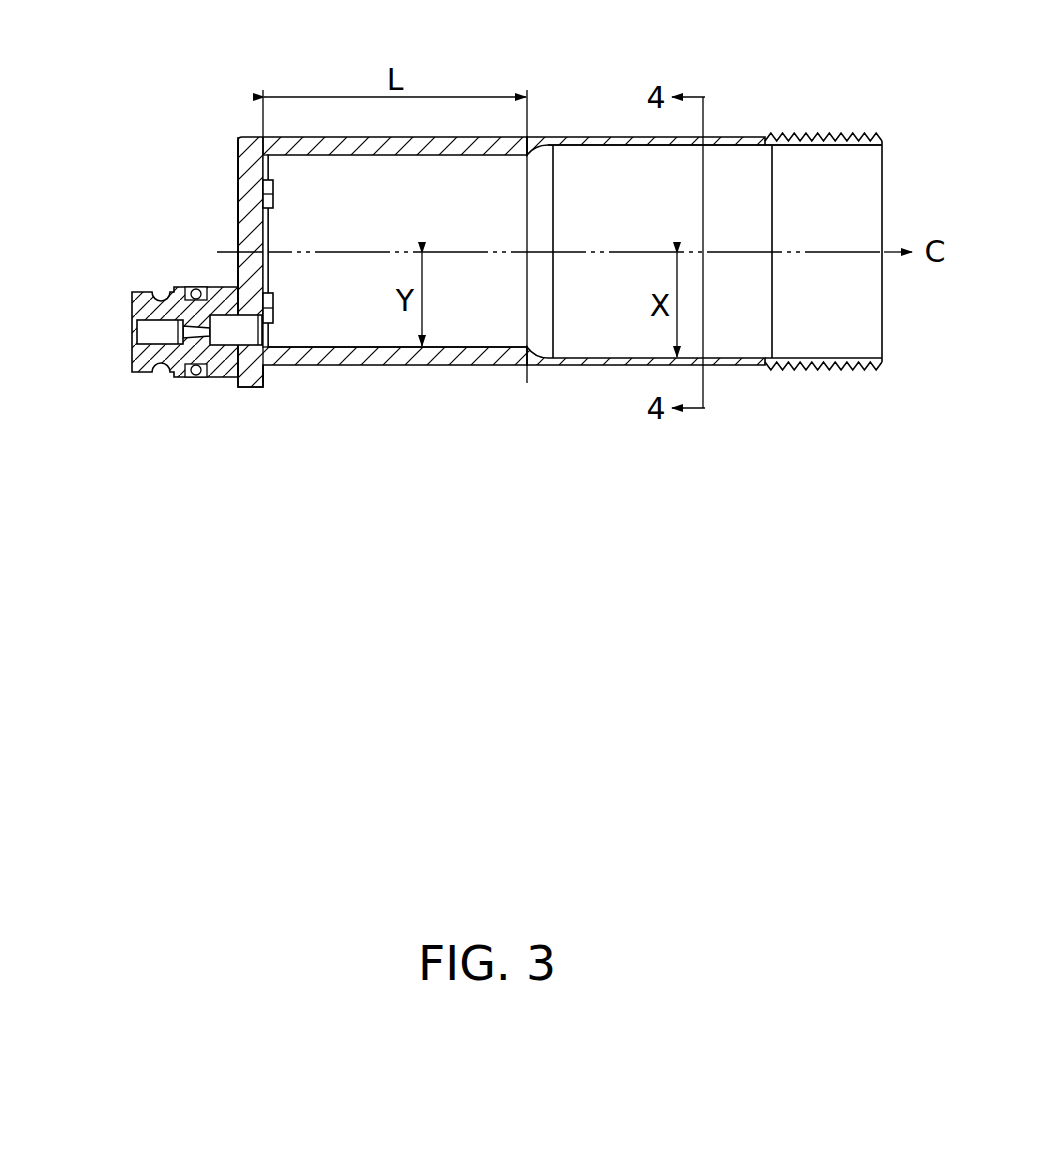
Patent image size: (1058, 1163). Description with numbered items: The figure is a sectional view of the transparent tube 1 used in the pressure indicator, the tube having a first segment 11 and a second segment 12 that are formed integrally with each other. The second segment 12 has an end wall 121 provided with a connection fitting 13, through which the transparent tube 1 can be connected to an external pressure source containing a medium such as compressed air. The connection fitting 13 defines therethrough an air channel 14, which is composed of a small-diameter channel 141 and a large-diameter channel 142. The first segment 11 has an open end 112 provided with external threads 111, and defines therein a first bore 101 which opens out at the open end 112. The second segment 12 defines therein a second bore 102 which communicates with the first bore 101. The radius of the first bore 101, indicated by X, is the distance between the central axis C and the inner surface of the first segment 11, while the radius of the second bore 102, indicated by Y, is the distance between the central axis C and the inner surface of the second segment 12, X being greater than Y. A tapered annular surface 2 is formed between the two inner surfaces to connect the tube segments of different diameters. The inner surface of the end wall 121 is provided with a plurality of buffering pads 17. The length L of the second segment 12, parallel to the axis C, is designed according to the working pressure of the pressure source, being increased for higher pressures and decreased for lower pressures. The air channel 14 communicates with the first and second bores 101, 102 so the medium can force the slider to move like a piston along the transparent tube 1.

The transparent tube 1 is at (386, 358).
The first bore 101 is at (617, 168).
The second bore 102 is at (466, 330).
The first segment 11 is at (730, 137).
The external threads 111 is at (812, 132).
The open end 112 is at (862, 165).
The second segment 12 is at (308, 368).
The end wall 121 is at (240, 233).
The connection fitting 13 is at (143, 305).
The air channel 14 is at (156, 411).
The small-diameter channel 141 is at (170, 335).
The large-diameter channel 142 is at (238, 330).
The buffering pads 17 is at (268, 188).
The tapered annular surface 2 is at (543, 350).